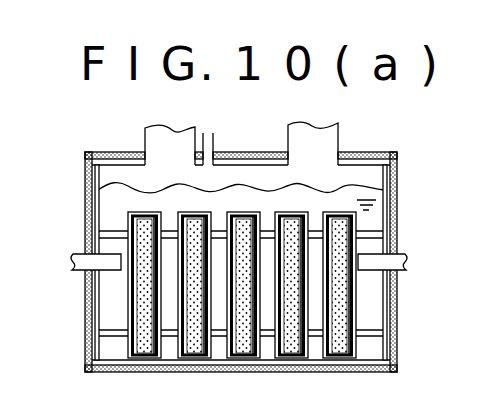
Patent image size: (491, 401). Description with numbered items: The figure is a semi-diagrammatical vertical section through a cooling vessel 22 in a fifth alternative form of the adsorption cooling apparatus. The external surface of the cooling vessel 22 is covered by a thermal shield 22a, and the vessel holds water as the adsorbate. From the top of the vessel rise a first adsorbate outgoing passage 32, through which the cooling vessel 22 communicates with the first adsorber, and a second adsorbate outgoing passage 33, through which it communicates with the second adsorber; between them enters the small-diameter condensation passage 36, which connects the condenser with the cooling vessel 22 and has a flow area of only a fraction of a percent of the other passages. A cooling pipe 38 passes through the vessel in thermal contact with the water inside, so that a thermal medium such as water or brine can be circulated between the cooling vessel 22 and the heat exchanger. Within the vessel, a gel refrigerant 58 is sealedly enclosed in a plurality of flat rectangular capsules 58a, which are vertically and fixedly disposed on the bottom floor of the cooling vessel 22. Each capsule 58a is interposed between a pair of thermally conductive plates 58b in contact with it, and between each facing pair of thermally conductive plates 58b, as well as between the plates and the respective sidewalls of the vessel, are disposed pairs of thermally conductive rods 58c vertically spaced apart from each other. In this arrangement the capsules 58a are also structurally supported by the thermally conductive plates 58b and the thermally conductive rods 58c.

The cooling vessel 22 is at (357, 149).
The thermal shield 22a is at (86, 233).
The first adsorbate outgoing passage 32 is at (168, 139).
The second adsorbate outgoing passage 33 is at (330, 143).
The condensation passage 36 is at (214, 138).
The cooling pipe 38 is at (405, 258).
The gel refrigerant 58 is at (340, 350).
The capsules 58a is at (249, 233).
The thermally conductive plates 58b is at (352, 297).
The thermally conductive rods 58c is at (116, 234).